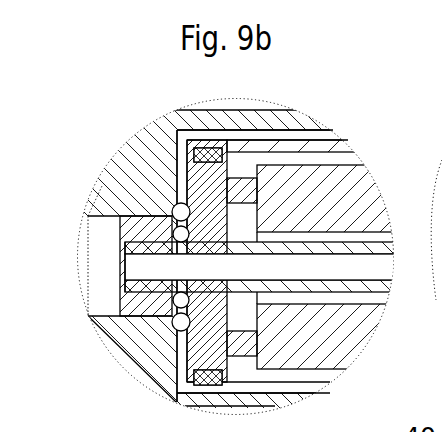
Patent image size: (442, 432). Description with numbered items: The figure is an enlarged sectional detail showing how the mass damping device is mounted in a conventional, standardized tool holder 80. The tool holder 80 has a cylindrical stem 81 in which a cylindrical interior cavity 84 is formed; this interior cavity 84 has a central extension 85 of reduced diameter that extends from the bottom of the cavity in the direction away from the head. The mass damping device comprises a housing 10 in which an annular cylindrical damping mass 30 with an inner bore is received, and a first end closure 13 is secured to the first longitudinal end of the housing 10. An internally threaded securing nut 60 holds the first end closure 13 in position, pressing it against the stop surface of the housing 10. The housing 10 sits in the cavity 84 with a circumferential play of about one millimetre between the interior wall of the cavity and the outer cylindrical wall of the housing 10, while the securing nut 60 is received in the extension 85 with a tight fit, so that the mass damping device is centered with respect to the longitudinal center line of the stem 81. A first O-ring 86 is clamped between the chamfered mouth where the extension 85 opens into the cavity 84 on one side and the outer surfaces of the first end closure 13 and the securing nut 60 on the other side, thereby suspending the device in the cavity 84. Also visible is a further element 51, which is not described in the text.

The housing 10 is at (248, 133).
The first end closure 13 is at (176, 168).
The damping mass 30 is at (336, 165).
The hub 51 is at (234, 357).
The securing nut 60 is at (90, 314).
The tool holder 80 is at (165, 431).
The cylindrical stem 81 is at (318, 429).
The cylindrical interior cavity 84 is at (311, 133).
The central extension 85 is at (95, 238).
The first O-ring 86 is at (176, 203).